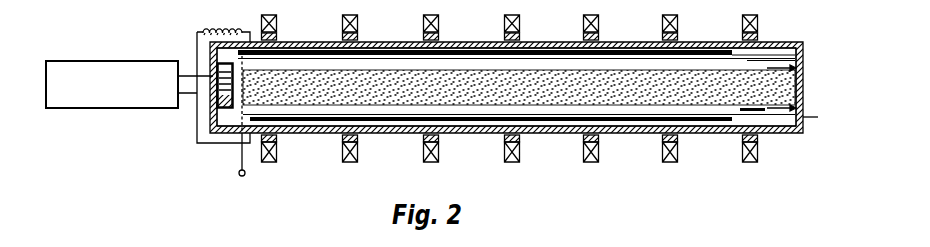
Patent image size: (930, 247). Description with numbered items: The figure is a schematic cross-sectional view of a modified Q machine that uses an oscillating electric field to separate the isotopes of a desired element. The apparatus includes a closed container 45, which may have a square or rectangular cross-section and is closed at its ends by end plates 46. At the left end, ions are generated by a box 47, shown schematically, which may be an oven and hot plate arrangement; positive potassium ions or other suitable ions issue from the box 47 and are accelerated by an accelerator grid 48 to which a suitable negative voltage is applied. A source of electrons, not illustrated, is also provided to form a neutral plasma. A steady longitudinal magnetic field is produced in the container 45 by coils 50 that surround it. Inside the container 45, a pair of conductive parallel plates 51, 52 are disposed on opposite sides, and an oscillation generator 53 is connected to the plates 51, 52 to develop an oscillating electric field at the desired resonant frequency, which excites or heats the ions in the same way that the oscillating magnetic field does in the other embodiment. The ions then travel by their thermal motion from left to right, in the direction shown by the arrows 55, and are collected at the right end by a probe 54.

The closed container 45 is at (552, 42).
The end plates 46 is at (213, 121).
The box 47 is at (213, 73).
The accelerator grid 48 is at (241, 117).
The coils 50 is at (425, 17).
The conductive parallel plate 51 is at (470, 51).
The conductive parallel plate 52 is at (470, 121).
The oscillation generator 53 is at (113, 61).
The probe 54 is at (743, 110).
The arrows 55 is at (710, 69).